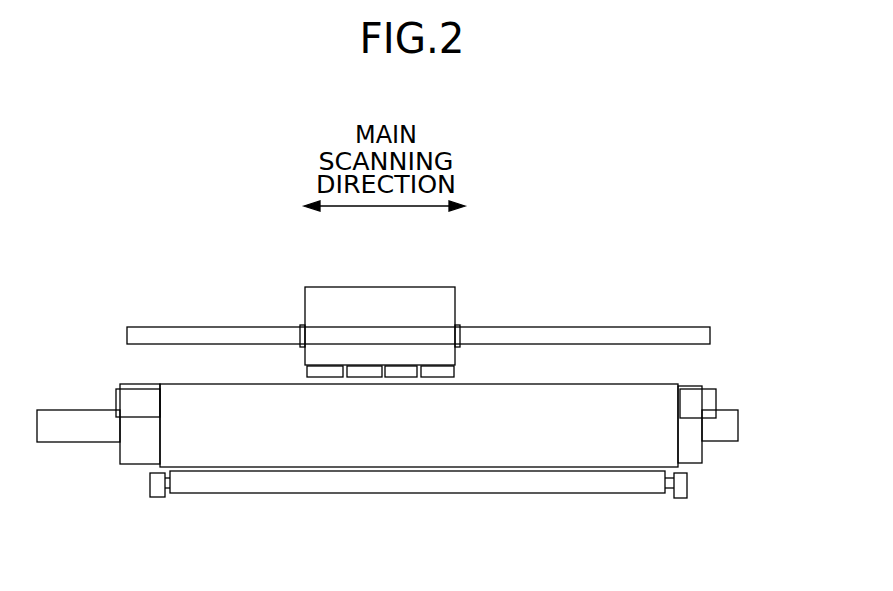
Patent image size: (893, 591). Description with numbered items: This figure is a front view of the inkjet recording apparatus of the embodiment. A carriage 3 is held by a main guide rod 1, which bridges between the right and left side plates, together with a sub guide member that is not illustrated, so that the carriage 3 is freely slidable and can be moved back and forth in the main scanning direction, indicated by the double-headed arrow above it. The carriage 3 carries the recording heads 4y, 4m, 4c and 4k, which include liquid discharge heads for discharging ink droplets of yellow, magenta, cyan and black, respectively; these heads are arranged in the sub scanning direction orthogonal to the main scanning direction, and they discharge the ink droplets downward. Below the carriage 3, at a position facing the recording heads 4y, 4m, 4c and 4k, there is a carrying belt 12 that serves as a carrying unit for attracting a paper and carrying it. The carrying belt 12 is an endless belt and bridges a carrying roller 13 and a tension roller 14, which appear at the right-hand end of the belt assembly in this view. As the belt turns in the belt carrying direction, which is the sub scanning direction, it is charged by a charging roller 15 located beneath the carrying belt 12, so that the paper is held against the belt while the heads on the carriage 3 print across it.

The main guide rod 1 is at (594, 333).
The carriage 3 is at (312, 302).
The recording head 4y is at (325, 372).
The recording head 4m is at (365, 372).
The recording head 4c is at (402, 372).
The recording head 4k is at (443, 372).
The carrying belt 12 is at (585, 457).
The carrying roller 13 is at (723, 432).
The tension roller 14 is at (706, 407).
The charging roller 15 is at (376, 490).